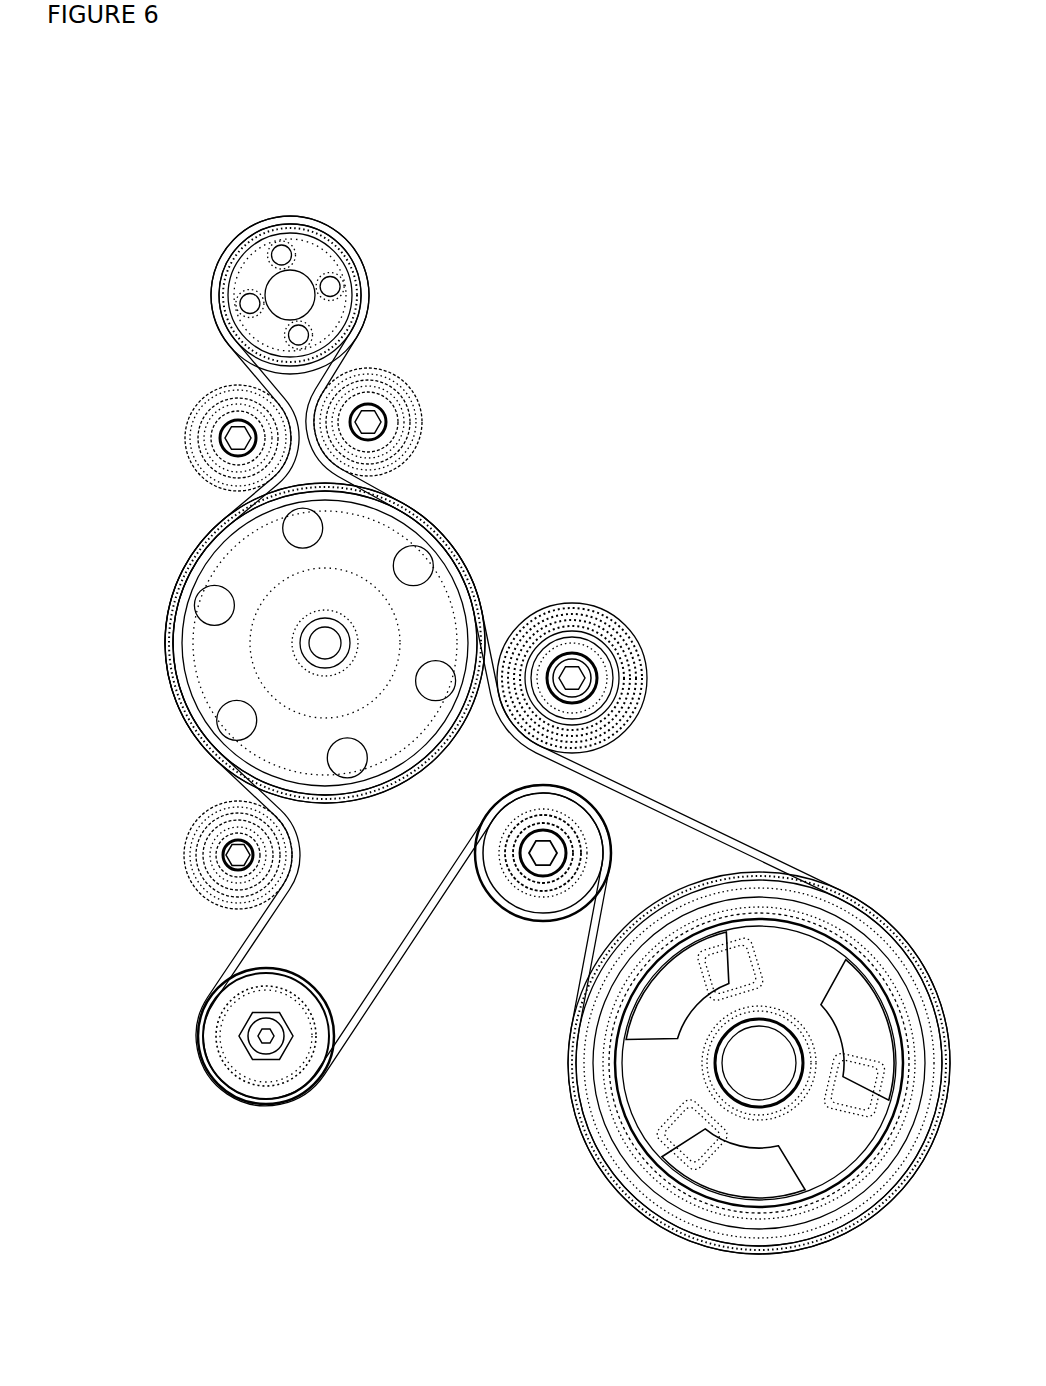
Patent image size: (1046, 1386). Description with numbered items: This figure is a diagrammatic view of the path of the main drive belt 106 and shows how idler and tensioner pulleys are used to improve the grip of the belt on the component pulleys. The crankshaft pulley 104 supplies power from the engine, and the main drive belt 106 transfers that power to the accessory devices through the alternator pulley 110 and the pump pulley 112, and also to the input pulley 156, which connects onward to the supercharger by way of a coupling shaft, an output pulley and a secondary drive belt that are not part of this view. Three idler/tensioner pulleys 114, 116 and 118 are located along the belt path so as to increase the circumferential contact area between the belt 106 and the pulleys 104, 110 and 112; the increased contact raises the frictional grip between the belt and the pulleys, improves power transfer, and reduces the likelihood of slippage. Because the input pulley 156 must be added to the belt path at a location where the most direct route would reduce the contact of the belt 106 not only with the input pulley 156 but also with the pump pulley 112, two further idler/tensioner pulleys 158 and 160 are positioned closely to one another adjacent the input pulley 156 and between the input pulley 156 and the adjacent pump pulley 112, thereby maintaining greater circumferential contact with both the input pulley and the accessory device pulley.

The crankshaft pulley 104 is at (830, 1237).
The main drive belt 106 is at (450, 540).
The alternator pulley 110 is at (230, 1097).
The pump pulley 112 is at (177, 593).
The idler/tensioner pulley 114 is at (610, 610).
The idler/tensioner pulley 116 is at (193, 837).
The idler/tensioner pulley 118 is at (520, 915).
The input pulley 156 is at (345, 247).
The idler/tensioner pulley 158 is at (213, 387).
The idler/tensioner pulley 160 is at (417, 387).